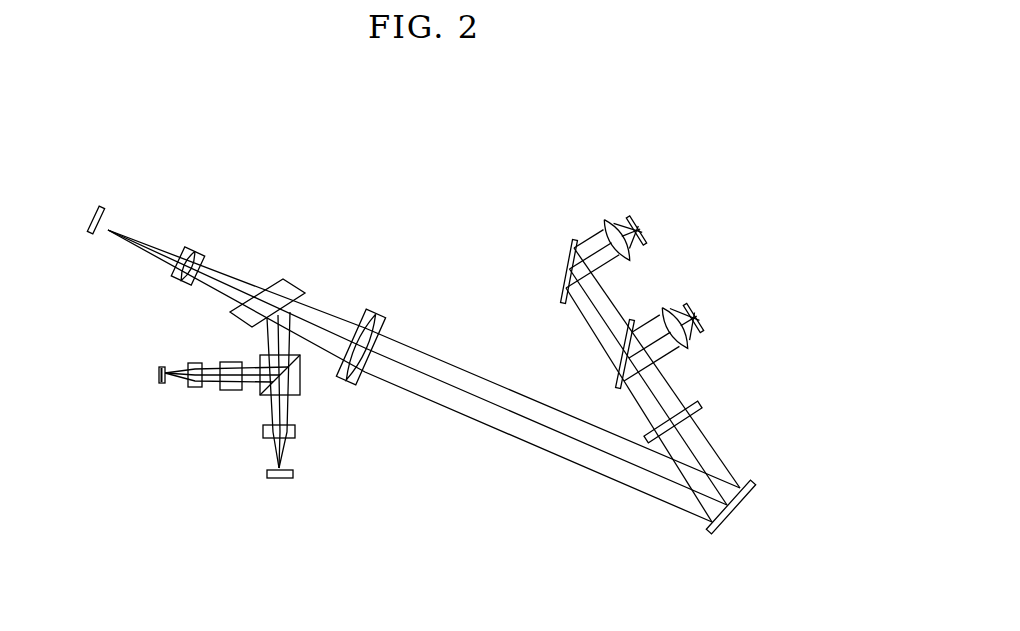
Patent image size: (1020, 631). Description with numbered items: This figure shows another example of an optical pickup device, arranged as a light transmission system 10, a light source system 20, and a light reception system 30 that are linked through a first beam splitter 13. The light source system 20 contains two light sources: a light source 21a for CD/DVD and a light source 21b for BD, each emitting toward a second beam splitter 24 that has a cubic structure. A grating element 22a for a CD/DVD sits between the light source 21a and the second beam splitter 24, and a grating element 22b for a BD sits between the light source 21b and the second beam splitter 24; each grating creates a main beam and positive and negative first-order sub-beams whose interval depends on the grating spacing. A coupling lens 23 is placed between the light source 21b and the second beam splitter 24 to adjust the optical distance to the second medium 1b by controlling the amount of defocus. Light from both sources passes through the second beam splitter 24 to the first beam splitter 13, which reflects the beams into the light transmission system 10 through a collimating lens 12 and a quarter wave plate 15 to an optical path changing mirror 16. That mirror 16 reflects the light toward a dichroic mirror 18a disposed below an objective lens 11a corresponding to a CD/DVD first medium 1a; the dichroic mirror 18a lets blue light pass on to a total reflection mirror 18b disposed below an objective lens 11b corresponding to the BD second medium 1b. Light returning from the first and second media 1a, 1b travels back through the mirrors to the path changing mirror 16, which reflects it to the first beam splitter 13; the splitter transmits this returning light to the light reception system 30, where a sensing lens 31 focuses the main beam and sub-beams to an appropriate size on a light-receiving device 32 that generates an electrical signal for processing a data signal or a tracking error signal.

The light transmission system 10 is at (635, 151).
The objective lens 11a is at (690, 348).
The objective lens 11b is at (612, 225).
The first medium 1a is at (710, 302).
The second medium 1b is at (644, 227).
The collimating lens 12 is at (377, 315).
The first beam splitter 13 is at (290, 285).
The quarter wave plate 15 is at (700, 410).
The optical path changing mirror 16 is at (747, 487).
The dichroic mirror 18a is at (618, 389).
The total reflection mirror 18b is at (567, 268).
The light source system 20 is at (145, 497).
The light source for CD/DVD 21a is at (293, 474).
The light source for BD 21b is at (158, 385).
The grating element for CD/DVD 22a is at (295, 430).
The grating element for BD 22b is at (195, 388).
The coupling lens 23 is at (233, 392).
The second beam splitter 24 is at (263, 358).
The light reception system 30 is at (112, 168).
The sensing lens 31 is at (195, 250).
The light-receiving device 32 is at (102, 207).